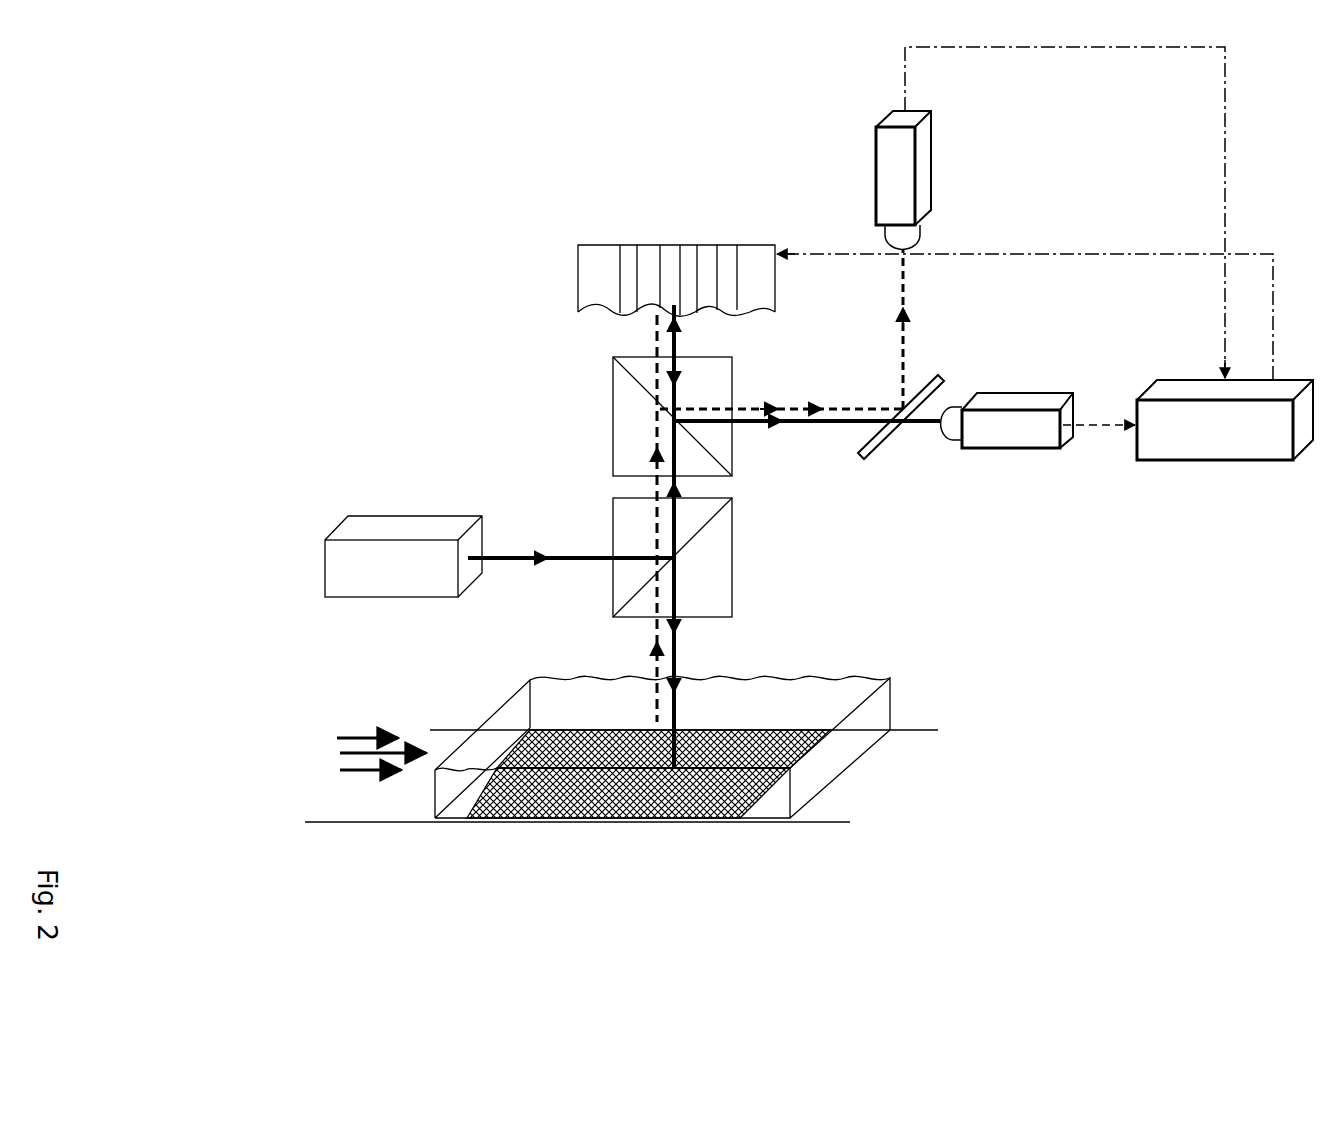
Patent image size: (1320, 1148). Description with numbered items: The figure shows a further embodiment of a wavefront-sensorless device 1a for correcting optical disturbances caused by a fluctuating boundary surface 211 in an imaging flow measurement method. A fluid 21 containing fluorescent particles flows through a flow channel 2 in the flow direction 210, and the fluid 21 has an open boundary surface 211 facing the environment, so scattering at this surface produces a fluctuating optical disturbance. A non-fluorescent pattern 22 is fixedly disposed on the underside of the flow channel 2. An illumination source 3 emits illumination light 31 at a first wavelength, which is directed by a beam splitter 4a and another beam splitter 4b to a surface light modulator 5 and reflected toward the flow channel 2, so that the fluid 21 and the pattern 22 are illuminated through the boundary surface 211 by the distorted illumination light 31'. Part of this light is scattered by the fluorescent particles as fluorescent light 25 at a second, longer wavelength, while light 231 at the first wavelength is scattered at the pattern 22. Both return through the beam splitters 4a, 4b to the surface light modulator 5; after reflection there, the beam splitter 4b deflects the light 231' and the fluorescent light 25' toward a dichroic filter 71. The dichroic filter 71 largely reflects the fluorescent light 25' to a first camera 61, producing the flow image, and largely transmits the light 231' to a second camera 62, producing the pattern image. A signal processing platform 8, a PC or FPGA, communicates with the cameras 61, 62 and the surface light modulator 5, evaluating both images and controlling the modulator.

The wavefront-sensorless device 1a is at (460, 358).
The flow channel 2 is at (915, 722).
The illumination source 3 is at (346, 563).
The beam splitter 4a is at (740, 580).
The beam splitter 4b is at (620, 375).
The surface light modulator 5 is at (588, 245).
The signal processing platform 8 is at (1160, 460).
The fluid 21 is at (880, 710).
The pattern 22 is at (585, 800).
The scattered light 25 is at (524, 536).
The fluorescent light 25' is at (807, 302).
The illumination light 31 is at (551, 483).
The illumination light 31' is at (837, 636).
The first camera 61 is at (930, 150).
The second camera 62 is at (992, 450).
The dichroic filter 71 is at (938, 372).
The flow direction 210 is at (340, 752).
The boundary surface 211 is at (545, 684).
The light scattered at the pattern 231 is at (823, 471).
The light scattered at the pattern 231' is at (845, 277).